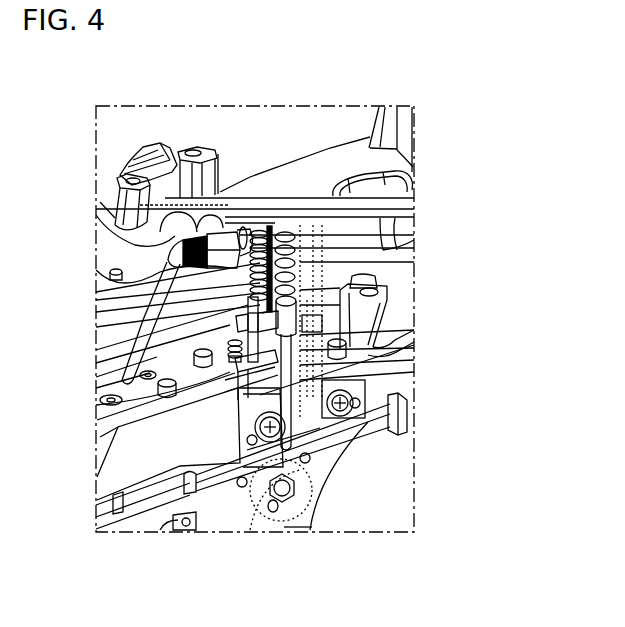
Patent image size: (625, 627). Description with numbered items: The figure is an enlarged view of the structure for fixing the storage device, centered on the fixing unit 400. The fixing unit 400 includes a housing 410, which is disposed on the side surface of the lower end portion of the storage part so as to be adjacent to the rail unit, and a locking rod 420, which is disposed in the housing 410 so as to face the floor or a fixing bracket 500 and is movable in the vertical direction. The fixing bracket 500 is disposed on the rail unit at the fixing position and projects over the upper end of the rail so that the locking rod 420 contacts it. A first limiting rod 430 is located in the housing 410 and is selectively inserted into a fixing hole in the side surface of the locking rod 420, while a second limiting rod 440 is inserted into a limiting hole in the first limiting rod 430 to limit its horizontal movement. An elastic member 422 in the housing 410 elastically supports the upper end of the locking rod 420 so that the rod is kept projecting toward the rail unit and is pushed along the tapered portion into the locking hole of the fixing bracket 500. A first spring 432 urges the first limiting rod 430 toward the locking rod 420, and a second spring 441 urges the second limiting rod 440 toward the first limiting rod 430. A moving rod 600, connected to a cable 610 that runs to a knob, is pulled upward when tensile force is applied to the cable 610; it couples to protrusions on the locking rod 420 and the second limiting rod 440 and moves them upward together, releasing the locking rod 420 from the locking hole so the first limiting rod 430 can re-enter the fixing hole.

The fixing unit 400 is at (263, 87).
The cable 610 is at (268, 232).
The housing 410 is at (300, 282).
The second spring 441 is at (175, 272).
The second limiting rod 440 is at (238, 328).
The first spring 432 is at (180, 338).
The first limiting rod 430 is at (250, 350).
The moving rod 600 is at (362, 343).
The elastic member 422 is at (364, 284).
The locking rod 420 is at (300, 408).
The fixing bracket 500 is at (300, 481).